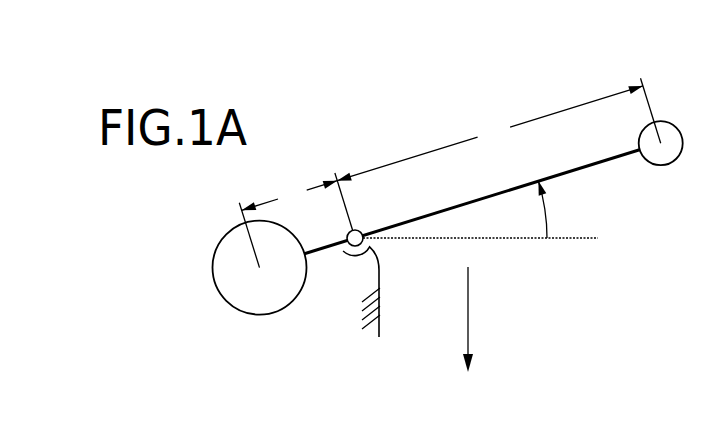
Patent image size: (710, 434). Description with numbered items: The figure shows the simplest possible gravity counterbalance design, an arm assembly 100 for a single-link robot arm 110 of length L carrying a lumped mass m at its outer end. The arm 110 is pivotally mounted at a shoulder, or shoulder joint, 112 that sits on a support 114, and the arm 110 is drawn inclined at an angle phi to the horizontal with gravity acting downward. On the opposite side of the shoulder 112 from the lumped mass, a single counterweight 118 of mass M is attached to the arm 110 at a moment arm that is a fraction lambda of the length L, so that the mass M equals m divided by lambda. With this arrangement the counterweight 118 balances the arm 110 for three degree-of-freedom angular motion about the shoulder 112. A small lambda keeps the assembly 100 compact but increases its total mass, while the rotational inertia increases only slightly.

The arm assembly 100 is at (360, 102).
The single-link robot arm 110 is at (456, 207).
The shoulder 112 is at (360, 232).
The support 114 is at (380, 292).
The counterweight 118 is at (228, 308).